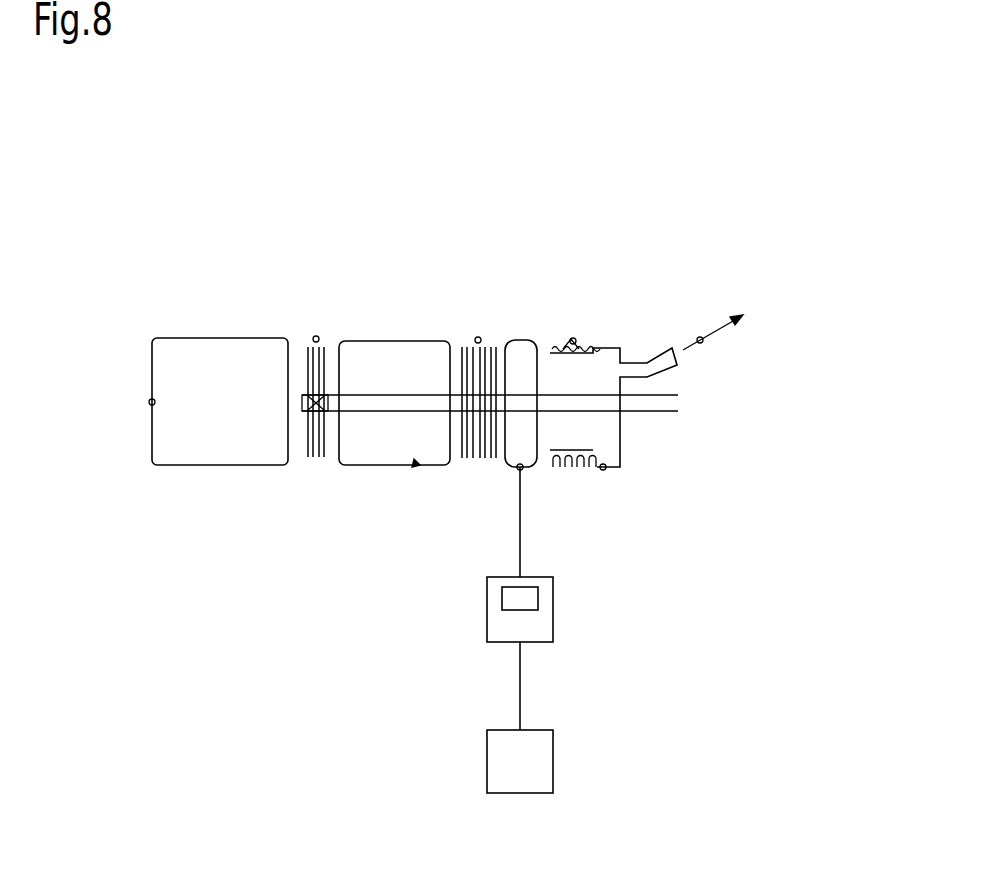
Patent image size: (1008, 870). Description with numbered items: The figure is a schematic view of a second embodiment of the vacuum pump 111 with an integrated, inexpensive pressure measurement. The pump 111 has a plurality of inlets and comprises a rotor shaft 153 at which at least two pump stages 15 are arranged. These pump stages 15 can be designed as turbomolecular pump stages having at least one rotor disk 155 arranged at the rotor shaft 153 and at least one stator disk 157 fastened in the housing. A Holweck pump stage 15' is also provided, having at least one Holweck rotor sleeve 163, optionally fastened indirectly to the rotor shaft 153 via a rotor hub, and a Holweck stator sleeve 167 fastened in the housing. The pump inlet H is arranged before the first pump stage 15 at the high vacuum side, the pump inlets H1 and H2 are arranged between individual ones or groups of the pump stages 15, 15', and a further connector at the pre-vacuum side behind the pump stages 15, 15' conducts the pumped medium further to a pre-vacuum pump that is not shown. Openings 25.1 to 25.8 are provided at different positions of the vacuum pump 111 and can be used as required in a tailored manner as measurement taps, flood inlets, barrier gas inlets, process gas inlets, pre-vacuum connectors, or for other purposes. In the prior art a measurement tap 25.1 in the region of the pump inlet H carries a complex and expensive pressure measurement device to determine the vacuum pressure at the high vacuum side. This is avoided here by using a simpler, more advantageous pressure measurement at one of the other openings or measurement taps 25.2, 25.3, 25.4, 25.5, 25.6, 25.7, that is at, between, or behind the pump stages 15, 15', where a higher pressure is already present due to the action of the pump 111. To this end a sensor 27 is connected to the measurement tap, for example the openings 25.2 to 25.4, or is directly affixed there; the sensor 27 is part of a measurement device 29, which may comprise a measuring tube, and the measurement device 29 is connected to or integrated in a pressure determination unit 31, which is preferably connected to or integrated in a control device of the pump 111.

The vacuum pump 111 is at (625, 225).
The pump inlet H is at (192, 338).
The pump inlet H1 is at (386, 341).
The pump inlet H2 is at (522, 340).
The pump stage 15 is at (461, 516).
The Holweck pump stage 15' is at (625, 423).
The measurement tap 25.1 is at (149, 401).
The opening 25.2 is at (314, 336).
The opening 25.3 is at (418, 467).
The opening 25.4 is at (477, 337).
The opening 25.5 is at (518, 470).
The opening 25.6 is at (572, 338).
The opening 25.7 is at (605, 469).
The opening 25.8 is at (702, 343).
The rotor shaft 153 is at (653, 405).
The rotor disk 155 is at (367, 452).
The stator disk 157 is at (317, 458).
The Holweck rotor sleeve 163 is at (589, 515).
The Holweck stator sleeve 167 is at (637, 551).
The sensor 27 is at (523, 600).
The measurement device 29 is at (553, 641).
The pressure determination unit 31 is at (553, 738).